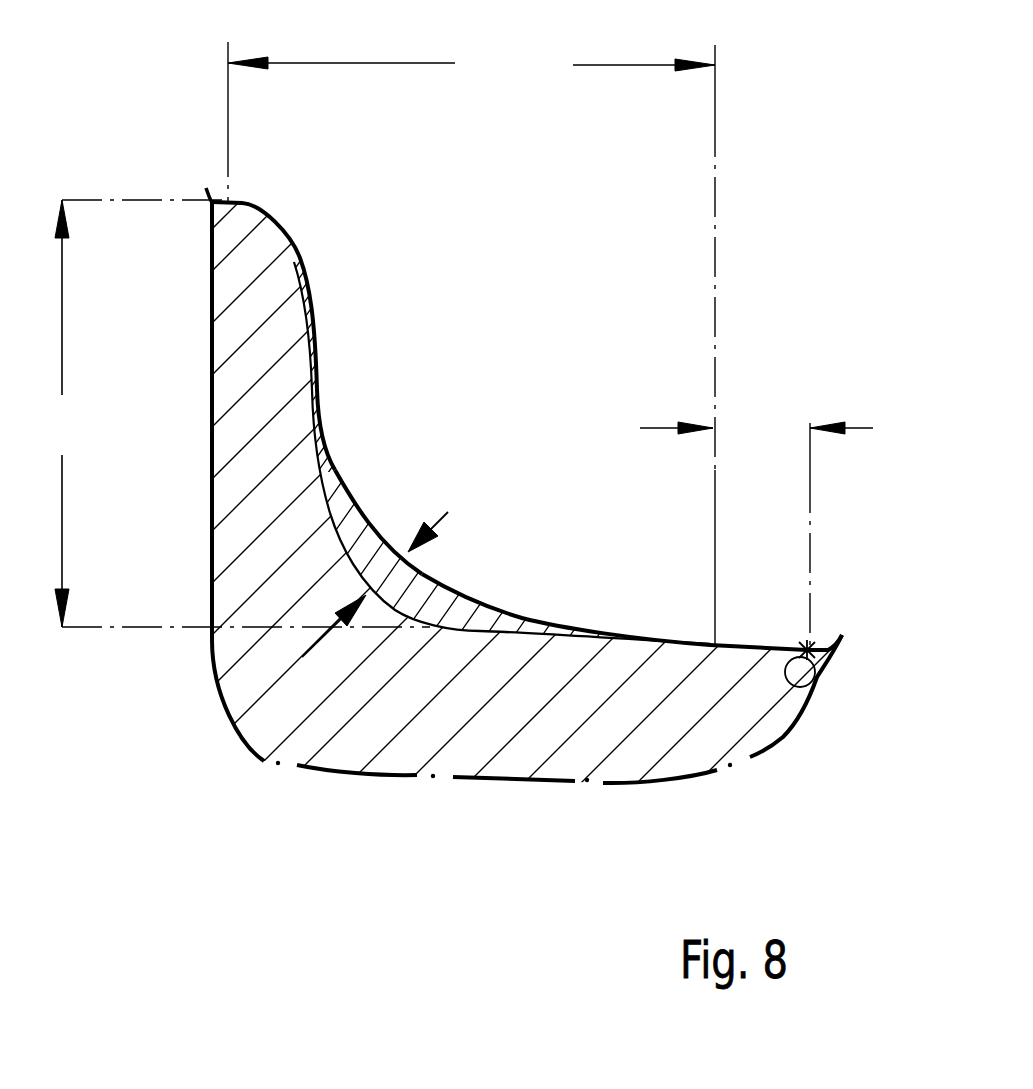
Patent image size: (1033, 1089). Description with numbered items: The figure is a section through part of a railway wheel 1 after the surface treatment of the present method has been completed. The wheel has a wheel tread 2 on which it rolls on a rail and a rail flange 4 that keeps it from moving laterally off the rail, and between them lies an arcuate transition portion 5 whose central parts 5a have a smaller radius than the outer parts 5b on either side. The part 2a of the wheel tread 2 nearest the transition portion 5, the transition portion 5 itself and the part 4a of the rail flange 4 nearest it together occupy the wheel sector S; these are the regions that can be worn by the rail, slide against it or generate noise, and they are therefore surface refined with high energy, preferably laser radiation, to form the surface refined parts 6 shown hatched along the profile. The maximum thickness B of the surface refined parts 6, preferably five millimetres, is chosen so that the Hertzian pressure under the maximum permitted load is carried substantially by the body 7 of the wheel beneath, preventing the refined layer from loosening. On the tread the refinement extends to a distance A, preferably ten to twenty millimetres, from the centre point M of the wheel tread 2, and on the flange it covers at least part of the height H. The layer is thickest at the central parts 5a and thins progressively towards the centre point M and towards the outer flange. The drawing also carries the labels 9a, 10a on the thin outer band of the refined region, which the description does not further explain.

The railway wheel 1 is at (713, 771).
The wheel tread 2 is at (757, 645).
The part of the wheel tread closest to the transition portion 2a is at (553, 640).
The rail flange 4 is at (230, 235).
The part of the rail flange closest to the transition portion 4a is at (305, 313).
The arcuate transition portion 5 is at (347, 569).
The central parts of the transition portion 5a is at (327, 537).
The outer parts of the transition portion 5b is at (413, 603).
The surface refined parts 6 is at (516, 450).
The body of the railway wheel 7 is at (623, 757).
The coating boundary layer 9a is at (331, 356).
The coating boundary layer 10a is at (331, 356).
The wheel sector S is at (471, 343).
The height of the rail flange H is at (240, 413).
The distance from the centre point of the wheel tread A is at (756, 530).
The maximum thickness of the surface refined parts B is at (387, 578).
The centre point of the wheel tread M is at (812, 697).